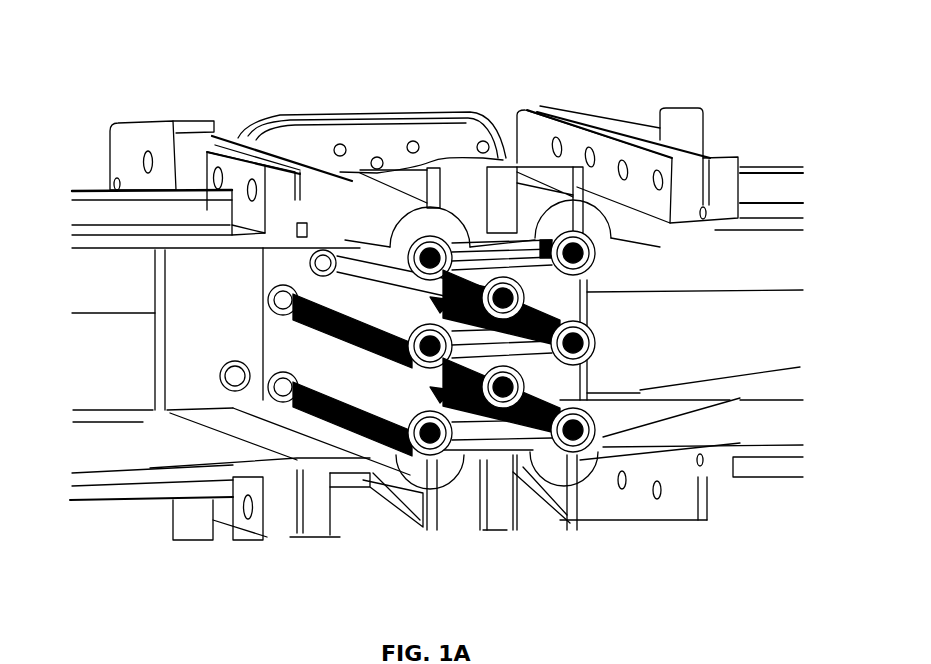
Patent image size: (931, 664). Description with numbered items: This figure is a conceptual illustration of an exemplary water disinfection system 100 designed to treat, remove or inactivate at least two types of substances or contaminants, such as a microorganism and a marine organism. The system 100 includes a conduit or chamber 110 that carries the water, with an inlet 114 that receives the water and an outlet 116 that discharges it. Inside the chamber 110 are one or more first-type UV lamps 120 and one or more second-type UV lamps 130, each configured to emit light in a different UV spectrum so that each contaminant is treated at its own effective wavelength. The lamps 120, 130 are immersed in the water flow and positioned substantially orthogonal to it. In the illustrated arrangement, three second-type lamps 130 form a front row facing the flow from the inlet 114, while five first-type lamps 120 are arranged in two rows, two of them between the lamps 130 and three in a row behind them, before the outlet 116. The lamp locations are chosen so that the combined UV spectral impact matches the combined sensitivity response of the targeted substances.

The water disinfection system 100 is at (302, 103).
The conduit or chamber 110 is at (423, 135).
The inlet 114 is at (138, 358).
The outlet 116 is at (742, 345).
The first-type UV lamps 120 is at (573, 255).
The second-type UV lamps 130 is at (410, 262).